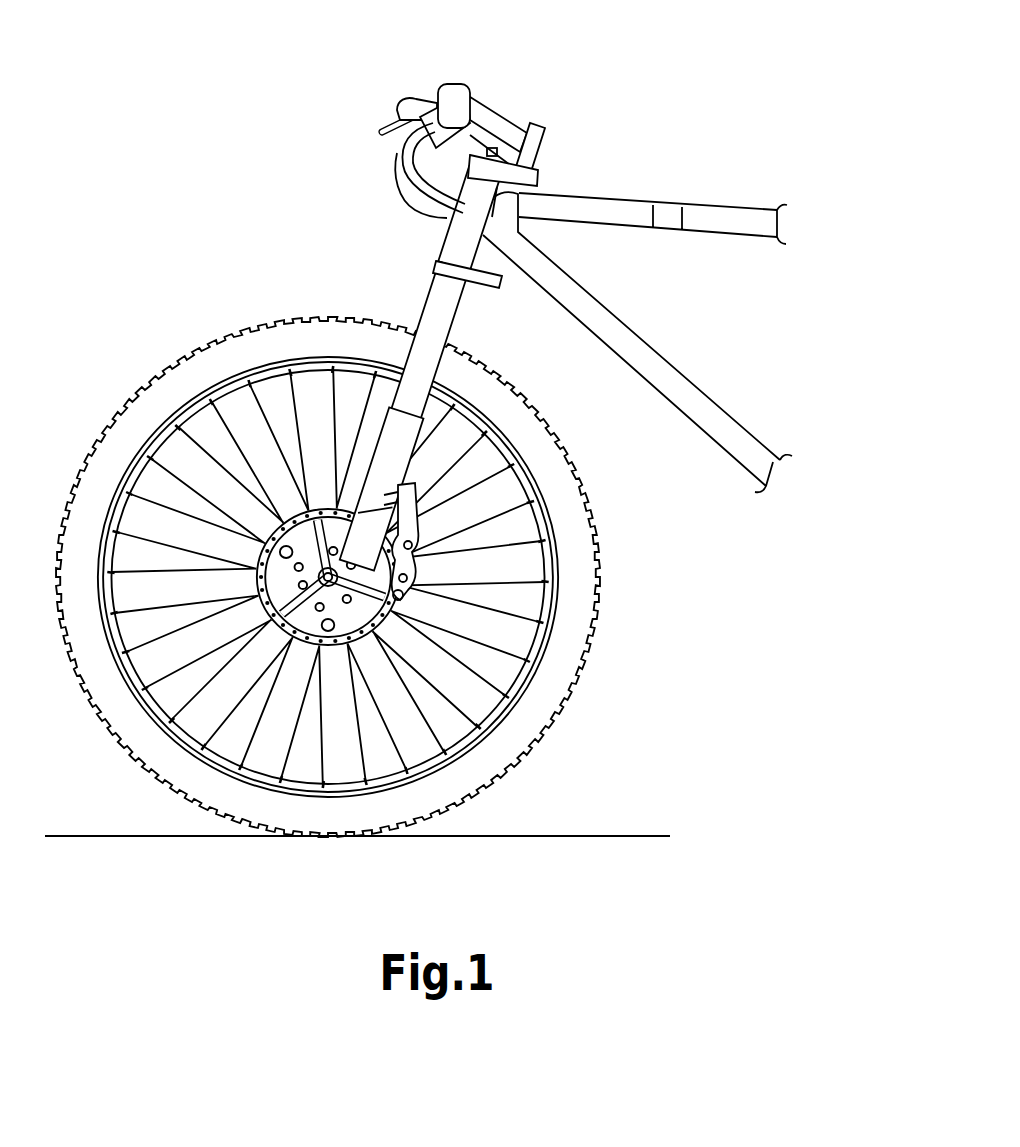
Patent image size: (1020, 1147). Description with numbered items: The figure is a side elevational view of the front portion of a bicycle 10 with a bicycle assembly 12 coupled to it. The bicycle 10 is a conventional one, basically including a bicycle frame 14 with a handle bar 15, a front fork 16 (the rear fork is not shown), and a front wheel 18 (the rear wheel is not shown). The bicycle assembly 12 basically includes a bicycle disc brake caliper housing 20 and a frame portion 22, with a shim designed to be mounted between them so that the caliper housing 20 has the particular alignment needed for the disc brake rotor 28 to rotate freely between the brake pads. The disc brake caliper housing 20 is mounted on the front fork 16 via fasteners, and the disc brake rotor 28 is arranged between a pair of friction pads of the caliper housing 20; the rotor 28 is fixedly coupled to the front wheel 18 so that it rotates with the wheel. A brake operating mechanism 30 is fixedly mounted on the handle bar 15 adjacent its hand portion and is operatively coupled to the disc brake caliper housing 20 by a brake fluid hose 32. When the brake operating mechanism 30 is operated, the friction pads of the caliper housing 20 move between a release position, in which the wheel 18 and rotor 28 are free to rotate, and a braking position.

The bicycle 10 is at (637, 255).
The bicycle assembly 12 is at (388, 544).
The bicycle frame 14 is at (610, 308).
The handle bar 15 is at (460, 78).
The front fork 16 is at (463, 317).
The front wheel 18 is at (328, 577).
The disc brake caliper housing 20 is at (412, 583).
The frame portion 22 is at (340, 513).
The disc brake rotor 28 is at (403, 598).
The brake operating mechanism 30 is at (437, 87).
The brake fluid hose 32 is at (443, 193).